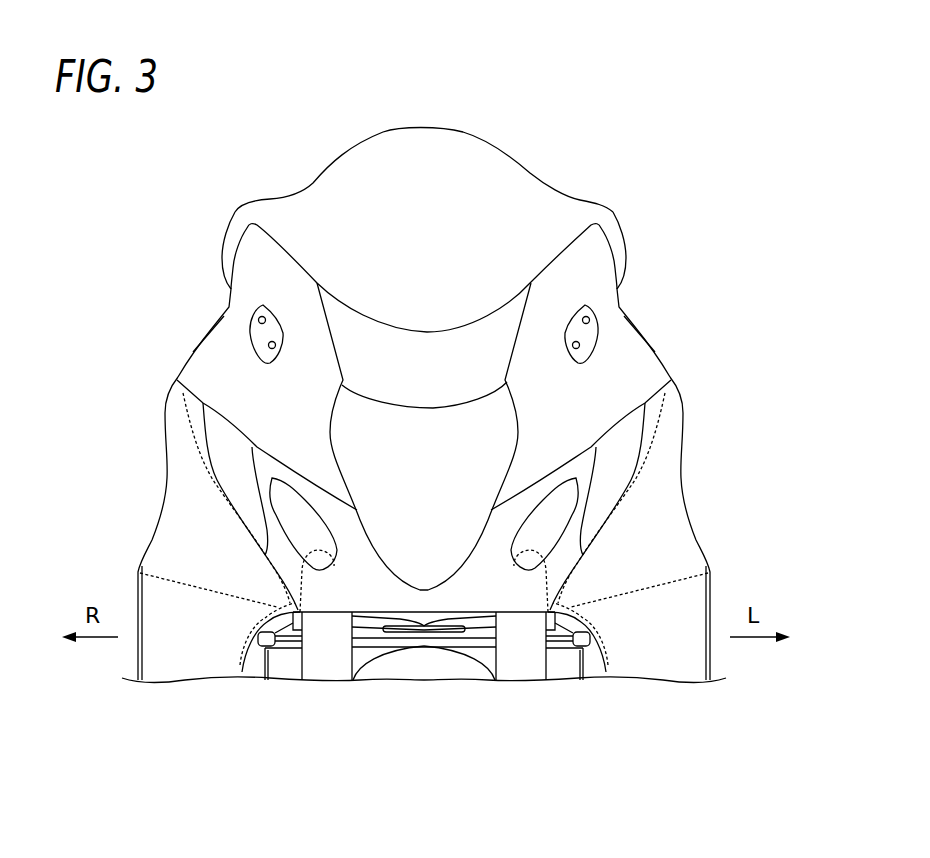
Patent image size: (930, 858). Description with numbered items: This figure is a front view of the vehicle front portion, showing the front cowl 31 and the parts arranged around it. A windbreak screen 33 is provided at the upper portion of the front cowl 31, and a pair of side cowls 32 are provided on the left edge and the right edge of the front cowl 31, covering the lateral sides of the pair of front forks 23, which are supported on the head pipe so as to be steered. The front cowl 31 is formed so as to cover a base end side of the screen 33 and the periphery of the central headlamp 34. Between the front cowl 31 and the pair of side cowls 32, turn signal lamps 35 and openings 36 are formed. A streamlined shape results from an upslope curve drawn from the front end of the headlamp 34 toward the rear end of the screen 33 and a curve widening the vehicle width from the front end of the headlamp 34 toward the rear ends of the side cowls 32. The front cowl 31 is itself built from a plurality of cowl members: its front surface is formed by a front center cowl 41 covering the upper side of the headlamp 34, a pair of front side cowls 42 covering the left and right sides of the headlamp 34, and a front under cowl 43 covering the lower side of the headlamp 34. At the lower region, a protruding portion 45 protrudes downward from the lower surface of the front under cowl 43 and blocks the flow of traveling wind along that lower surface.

The front fork 23 is at (358, 683).
The front cowl 31 is at (199, 305).
The side cowl 32 is at (157, 520).
The windbreak screen 33 is at (465, 142).
The headlamp 34 is at (503, 443).
The turn signal lamp 35 is at (217, 437).
The opening 36 is at (712, 593).
The front center cowl 41 is at (472, 333).
The front side cowl 42 is at (248, 278).
The front under cowl 43 is at (420, 602).
The protruding portion 45 is at (452, 642).